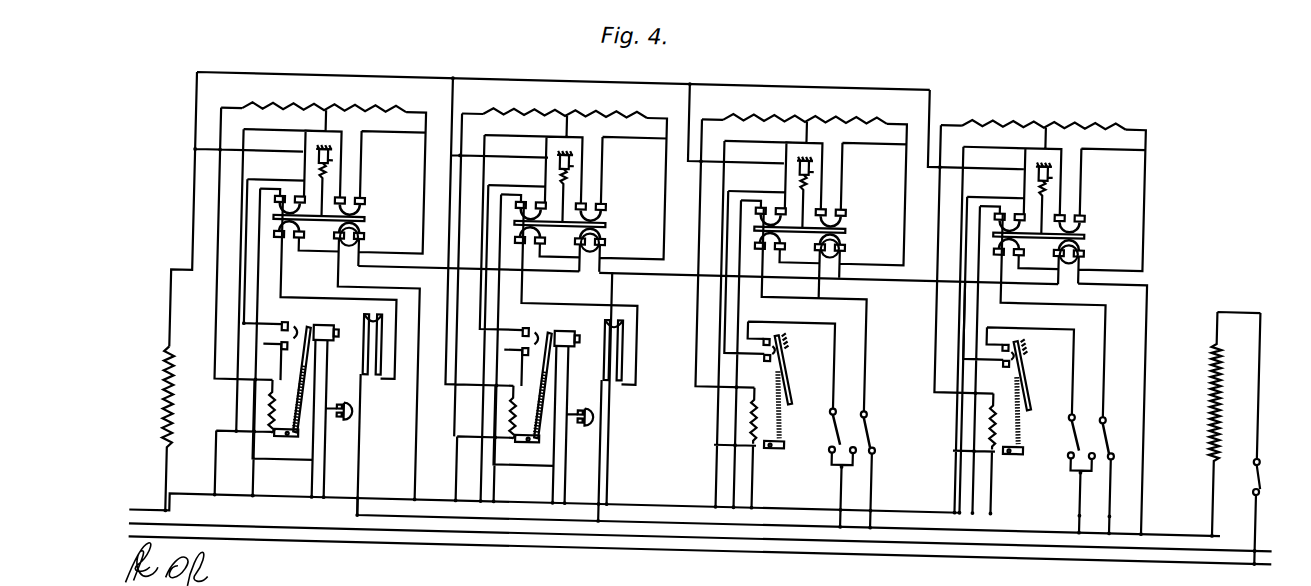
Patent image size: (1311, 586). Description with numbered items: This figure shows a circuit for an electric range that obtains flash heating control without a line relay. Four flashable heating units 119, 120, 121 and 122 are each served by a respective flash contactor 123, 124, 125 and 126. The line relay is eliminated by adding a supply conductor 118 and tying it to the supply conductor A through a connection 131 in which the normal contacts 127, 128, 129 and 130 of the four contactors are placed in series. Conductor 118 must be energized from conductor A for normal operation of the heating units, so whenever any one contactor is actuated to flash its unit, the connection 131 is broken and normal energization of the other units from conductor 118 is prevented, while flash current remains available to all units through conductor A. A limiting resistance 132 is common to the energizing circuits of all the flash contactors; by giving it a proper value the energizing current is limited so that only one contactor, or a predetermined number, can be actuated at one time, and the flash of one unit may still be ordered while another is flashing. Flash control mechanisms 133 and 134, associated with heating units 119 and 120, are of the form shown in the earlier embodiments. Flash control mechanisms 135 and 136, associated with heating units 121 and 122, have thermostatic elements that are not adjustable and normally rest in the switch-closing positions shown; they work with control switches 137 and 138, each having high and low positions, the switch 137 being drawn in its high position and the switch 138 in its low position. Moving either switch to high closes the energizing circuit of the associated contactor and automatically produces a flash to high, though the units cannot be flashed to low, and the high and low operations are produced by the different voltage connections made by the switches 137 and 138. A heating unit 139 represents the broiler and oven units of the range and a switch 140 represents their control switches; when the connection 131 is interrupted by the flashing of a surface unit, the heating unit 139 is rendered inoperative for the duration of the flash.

The supply conductor 118 is at (668, 510).
The flashable heating unit 119 is at (324, 99).
The flashable heating unit 120 is at (565, 105).
The flashable heating unit 121 is at (805, 110).
The flashable heating unit 122 is at (1044, 116).
The flash contactor 123 is at (409, 217).
The flash contactor 124 is at (648, 216).
The flash contactor 125 is at (888, 215).
The flash contactor 126 is at (1126, 214).
The normal contacts 127 is at (362, 236).
The normal contacts 128 is at (603, 236).
The normal contacts 129 is at (843, 236).
The normal contacts 130 is at (1082, 236).
The connection 131 is at (1152, 272).
The limiting resistance 132 is at (176, 392).
The flash control mechanism 133 is at (359, 372).
The flash control mechanism 134 is at (600, 373).
The flash control mechanism 135 is at (825, 367).
The flash control mechanism 136 is at (1062, 373).
The control switch 137 is at (908, 425).
The control switch 138 is at (1139, 429).
The heating unit 139 is at (1220, 382).
The switch 140 is at (1270, 456).